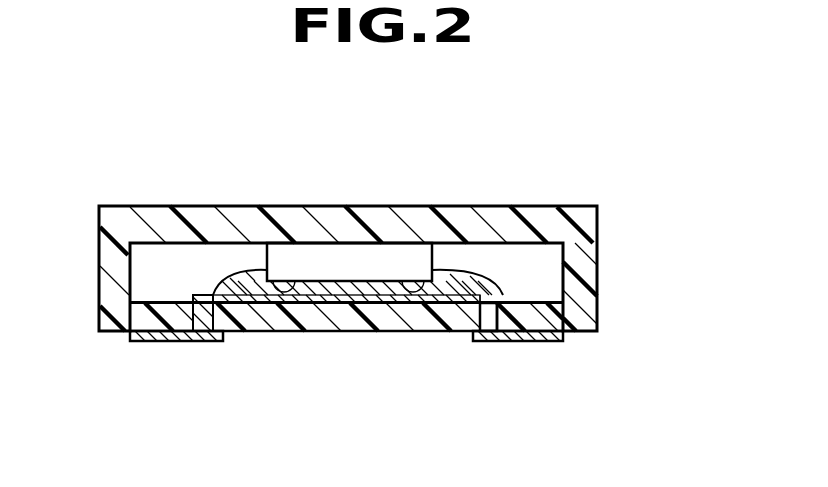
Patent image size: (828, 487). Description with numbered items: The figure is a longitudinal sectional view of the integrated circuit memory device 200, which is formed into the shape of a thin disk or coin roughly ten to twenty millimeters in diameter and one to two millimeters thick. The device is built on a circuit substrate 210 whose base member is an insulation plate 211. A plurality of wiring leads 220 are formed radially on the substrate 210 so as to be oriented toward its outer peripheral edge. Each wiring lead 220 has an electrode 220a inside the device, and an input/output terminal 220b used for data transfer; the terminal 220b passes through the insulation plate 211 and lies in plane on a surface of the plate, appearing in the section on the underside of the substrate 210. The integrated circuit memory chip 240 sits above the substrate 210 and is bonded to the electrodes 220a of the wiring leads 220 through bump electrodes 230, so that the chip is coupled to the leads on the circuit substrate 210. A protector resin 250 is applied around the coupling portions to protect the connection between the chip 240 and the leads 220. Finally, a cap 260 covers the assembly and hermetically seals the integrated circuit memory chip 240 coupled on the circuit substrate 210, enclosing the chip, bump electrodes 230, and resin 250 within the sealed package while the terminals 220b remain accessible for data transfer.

The integrated circuit memory device 200 is at (362, 188).
The circuit substrate 210 is at (318, 316).
The insulation plate 211 is at (553, 315).
The wiring leads 220 is at (492, 337).
The electrode 220a is at (420, 300).
The input/output terminal 220b is at (548, 340).
The bump electrodes 230 is at (283, 290).
The integrated circuit memory chip 240 is at (358, 268).
The protector resin 250 is at (252, 287).
The cap 260 is at (585, 267).